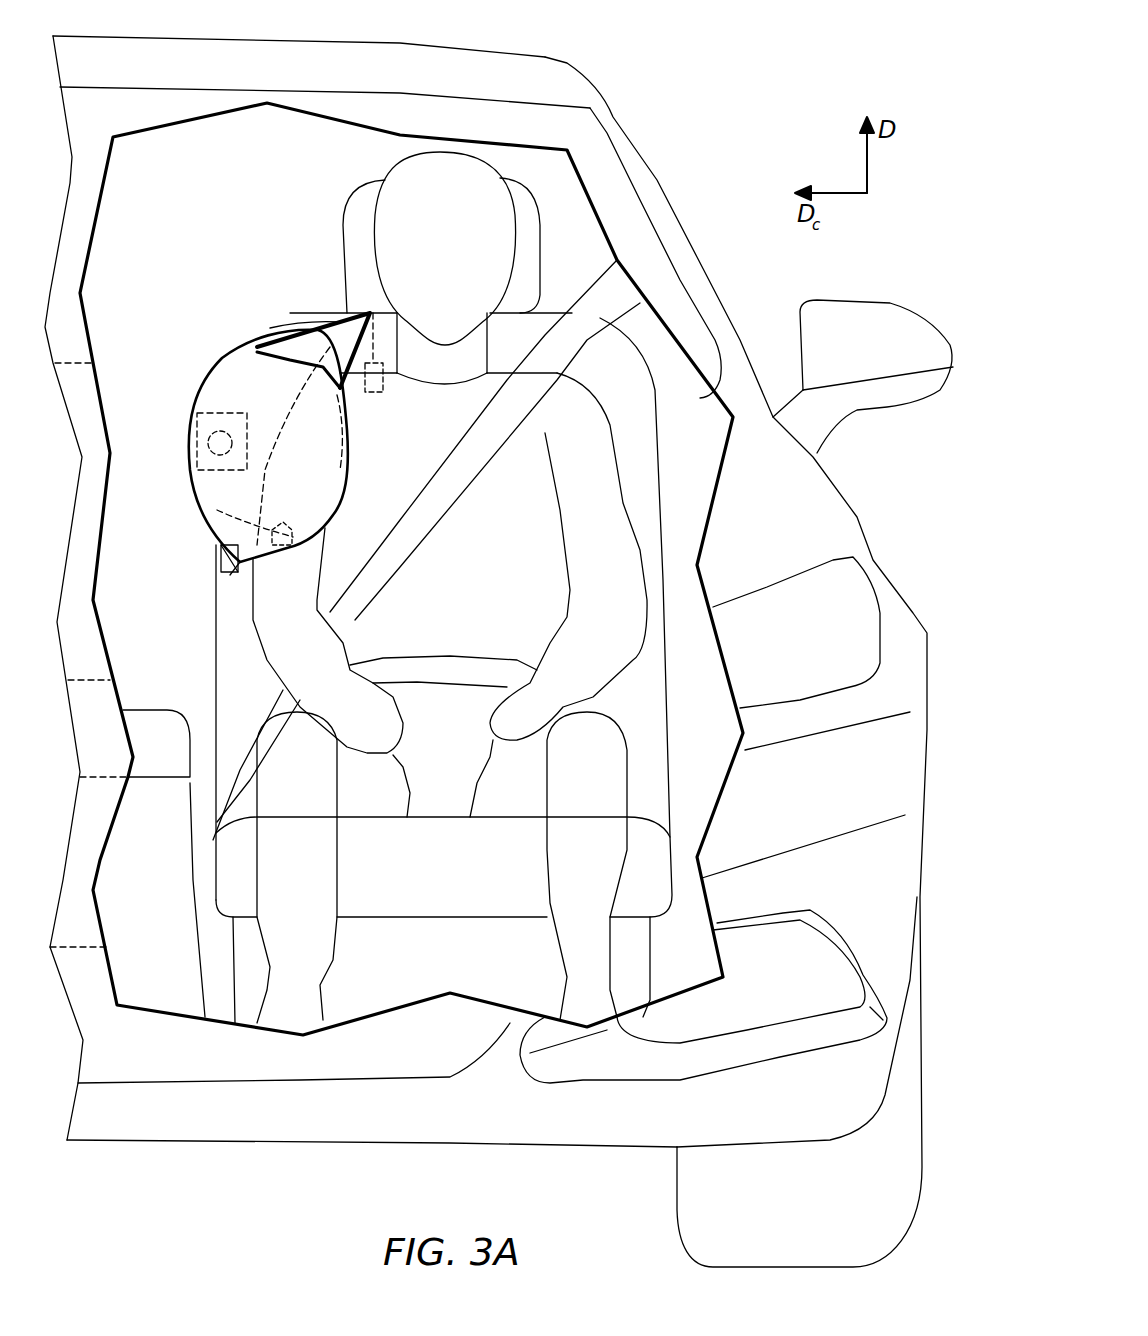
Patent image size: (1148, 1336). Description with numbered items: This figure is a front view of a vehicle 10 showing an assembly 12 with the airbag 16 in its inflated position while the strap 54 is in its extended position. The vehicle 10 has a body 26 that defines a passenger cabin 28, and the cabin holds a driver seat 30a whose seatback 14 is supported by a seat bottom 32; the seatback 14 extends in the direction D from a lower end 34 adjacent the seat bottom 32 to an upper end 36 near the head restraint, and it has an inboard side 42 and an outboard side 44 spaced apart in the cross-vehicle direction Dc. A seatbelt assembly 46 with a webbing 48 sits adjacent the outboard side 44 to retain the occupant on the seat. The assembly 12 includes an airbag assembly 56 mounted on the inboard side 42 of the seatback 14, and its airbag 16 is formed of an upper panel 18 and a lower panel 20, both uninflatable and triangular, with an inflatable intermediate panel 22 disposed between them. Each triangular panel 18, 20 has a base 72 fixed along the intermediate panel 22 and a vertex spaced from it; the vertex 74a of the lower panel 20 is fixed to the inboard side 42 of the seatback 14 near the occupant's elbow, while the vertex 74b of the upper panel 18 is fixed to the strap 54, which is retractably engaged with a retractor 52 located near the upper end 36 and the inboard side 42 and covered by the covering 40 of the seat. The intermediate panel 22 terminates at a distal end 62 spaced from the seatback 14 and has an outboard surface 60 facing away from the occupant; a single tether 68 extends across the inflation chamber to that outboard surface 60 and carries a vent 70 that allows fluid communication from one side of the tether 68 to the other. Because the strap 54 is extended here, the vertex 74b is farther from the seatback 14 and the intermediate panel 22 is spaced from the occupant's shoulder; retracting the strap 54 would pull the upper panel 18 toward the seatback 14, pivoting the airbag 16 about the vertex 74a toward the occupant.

The vehicle 10 is at (735, 58).
The assembly 12 is at (302, 153).
The seatback 14 is at (663, 542).
The airbag 16 is at (348, 450).
The upper panel 18 is at (298, 338).
The lower panel 20 is at (222, 548).
The intermediate panel 22 is at (205, 508).
The body 26 is at (657, 178).
The passenger cabin 28 is at (153, 174).
The driver seat 30a is at (677, 697).
The seat bottom 32 is at (400, 917).
The lower end 34 is at (677, 817).
The upper end 36 is at (649, 355).
The covering 40 is at (452, 884).
The inboard side 42 is at (215, 667).
The outboard side 44 is at (660, 447).
The seatbelt assembly 46 is at (584, 290).
The webbing 48 is at (640, 325).
The retractor 52 is at (383, 383).
The strap 54 is at (377, 340).
The airbag assembly 56 is at (254, 228).
The outboard surface 60 is at (307, 517).
The distal end 62 is at (347, 430).
The tether 68 is at (210, 473).
The vent 70 is at (200, 440).
The base 72 is at (257, 350).
The vertex of lower panel 74a is at (222, 578).
The vertex of upper panel 74b is at (337, 387).